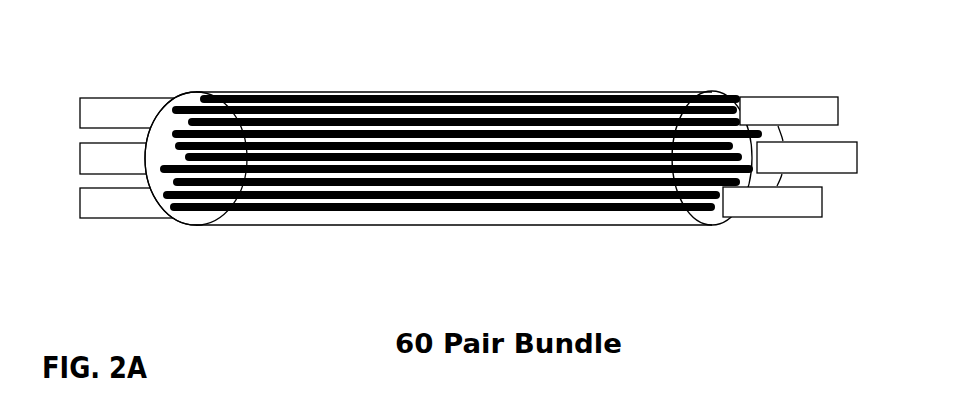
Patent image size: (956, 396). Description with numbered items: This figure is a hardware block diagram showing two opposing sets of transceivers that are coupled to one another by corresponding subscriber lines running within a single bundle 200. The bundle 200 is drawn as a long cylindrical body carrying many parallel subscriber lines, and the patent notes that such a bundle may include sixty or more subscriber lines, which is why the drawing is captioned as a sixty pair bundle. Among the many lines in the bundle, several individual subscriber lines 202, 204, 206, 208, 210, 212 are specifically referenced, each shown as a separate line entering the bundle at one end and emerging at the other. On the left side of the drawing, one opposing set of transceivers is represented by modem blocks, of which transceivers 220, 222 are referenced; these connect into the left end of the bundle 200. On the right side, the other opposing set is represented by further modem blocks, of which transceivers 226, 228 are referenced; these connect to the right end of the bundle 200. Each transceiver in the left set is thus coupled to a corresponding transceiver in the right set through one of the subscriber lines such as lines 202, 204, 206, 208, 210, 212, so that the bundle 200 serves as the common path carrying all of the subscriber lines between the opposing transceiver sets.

The bundle 200 is at (483, 83).
The subscriber line 202 is at (275, 99).
The subscriber line 204 is at (308, 112).
The subscriber line 206 is at (283, 190).
The subscriber line 208 is at (308, 201).
The subscriber line 210 is at (380, 207).
The subscriber line 212 is at (718, 160).
The transceiver 220 is at (128, 97).
The transceiver 222 is at (140, 218).
The transceiver 226 is at (800, 97).
The transceiver 228 is at (787, 217).